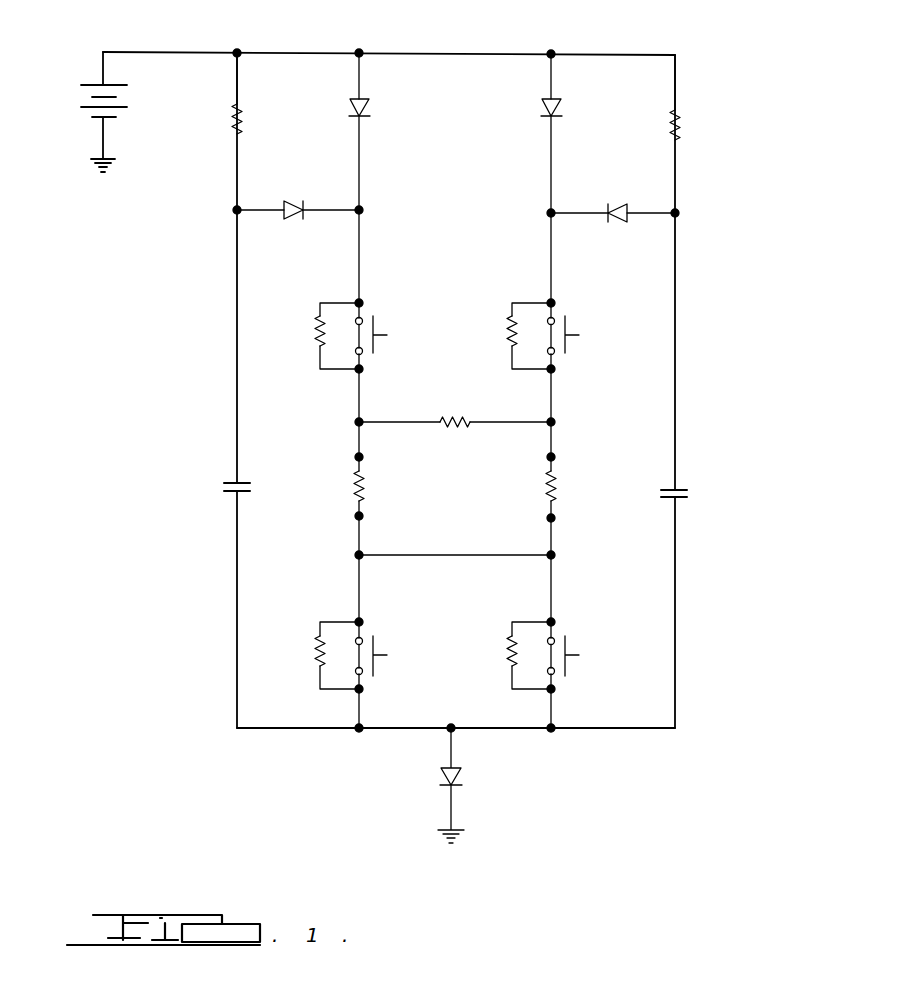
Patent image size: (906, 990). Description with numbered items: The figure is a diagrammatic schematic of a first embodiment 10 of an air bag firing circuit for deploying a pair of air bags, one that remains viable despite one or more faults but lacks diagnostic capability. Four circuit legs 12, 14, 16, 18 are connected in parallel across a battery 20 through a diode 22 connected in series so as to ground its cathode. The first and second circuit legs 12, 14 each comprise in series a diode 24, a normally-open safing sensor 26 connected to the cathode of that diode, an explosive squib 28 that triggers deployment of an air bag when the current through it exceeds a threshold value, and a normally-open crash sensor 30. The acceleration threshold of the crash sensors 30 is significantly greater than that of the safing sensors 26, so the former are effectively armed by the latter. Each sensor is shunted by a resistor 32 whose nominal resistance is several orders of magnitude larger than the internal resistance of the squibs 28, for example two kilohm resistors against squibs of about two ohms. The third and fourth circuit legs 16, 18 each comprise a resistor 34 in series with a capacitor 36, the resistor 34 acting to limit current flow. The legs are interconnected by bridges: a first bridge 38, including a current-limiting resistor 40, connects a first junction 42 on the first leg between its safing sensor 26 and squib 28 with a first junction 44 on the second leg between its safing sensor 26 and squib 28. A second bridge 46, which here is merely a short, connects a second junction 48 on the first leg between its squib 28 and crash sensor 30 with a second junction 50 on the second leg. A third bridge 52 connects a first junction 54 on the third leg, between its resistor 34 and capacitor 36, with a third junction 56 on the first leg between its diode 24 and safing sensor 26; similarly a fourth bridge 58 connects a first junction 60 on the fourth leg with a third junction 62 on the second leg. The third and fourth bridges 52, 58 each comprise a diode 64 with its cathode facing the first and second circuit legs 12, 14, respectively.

The first embodiment of the firing circuit 10 is at (745, 43).
The first circuit leg 12 is at (360, 80).
The second circuit leg 14 is at (552, 80).
The third circuit leg 16 is at (237, 83).
The fourth circuit leg 18 is at (676, 78).
The battery 20 is at (82, 85).
The diode 22 is at (455, 787).
The diode 24 is at (362, 118).
The safing sensor 26 is at (374, 349).
The explosive squib 28 is at (362, 489).
The crash sensor 30 is at (374, 670).
The shunting resistor 32 is at (318, 336).
The resistor 34 is at (248, 125).
The capacitor 36 is at (222, 489).
The first bridge 38 is at (479, 428).
The resistor 40 is at (458, 418).
The first junction 42 is at (357, 422).
The first junction 44 is at (553, 422).
The second bridge 46 is at (465, 551).
The second junction 48 is at (357, 555).
The second junction 50 is at (553, 556).
The third bridge 52 is at (294, 221).
The first junction 54 is at (235, 211).
The third junction 56 is at (362, 210).
The fourth bridge 58 is at (616, 225).
The first junction 60 is at (677, 214).
The third junction 62 is at (549, 214).
The diode 64 is at (305, 203).